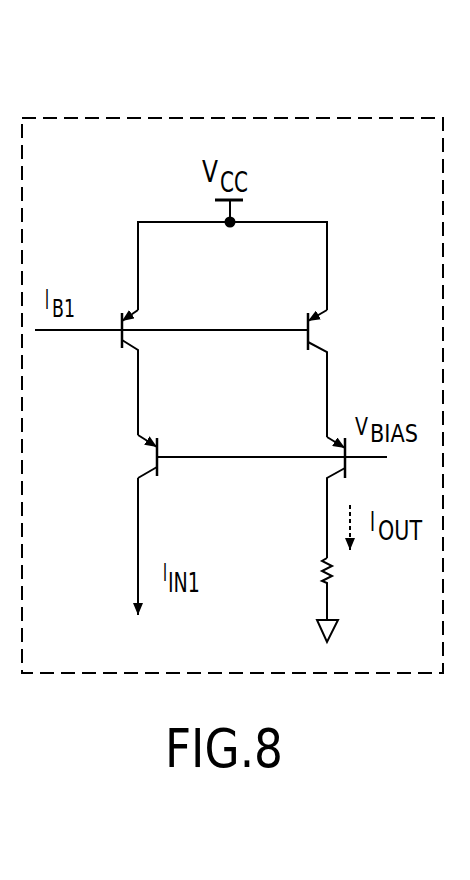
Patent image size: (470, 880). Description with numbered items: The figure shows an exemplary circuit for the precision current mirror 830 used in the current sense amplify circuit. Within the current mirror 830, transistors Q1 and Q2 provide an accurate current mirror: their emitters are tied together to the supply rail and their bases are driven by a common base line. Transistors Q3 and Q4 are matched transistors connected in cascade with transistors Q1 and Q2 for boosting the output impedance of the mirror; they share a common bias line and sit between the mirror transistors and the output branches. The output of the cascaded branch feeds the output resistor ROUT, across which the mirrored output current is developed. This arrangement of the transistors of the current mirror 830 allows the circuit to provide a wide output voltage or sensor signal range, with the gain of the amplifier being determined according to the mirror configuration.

The current mirror CM1 830 is at (293, 118).
The transistor Q1 is at (158, 364).
The transistor Q2 is at (350, 365).
The transistor Q3 is at (113, 458).
The transistor Q4 is at (305, 488).
The output resistor ROUT is at (372, 589).